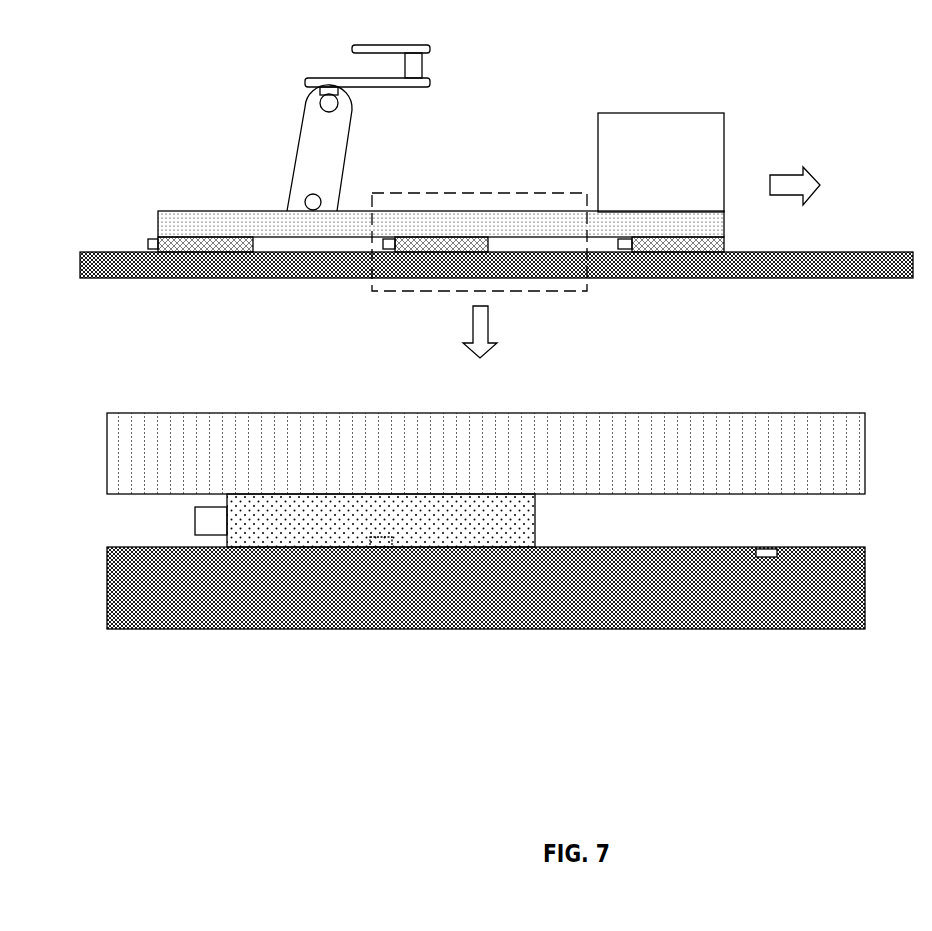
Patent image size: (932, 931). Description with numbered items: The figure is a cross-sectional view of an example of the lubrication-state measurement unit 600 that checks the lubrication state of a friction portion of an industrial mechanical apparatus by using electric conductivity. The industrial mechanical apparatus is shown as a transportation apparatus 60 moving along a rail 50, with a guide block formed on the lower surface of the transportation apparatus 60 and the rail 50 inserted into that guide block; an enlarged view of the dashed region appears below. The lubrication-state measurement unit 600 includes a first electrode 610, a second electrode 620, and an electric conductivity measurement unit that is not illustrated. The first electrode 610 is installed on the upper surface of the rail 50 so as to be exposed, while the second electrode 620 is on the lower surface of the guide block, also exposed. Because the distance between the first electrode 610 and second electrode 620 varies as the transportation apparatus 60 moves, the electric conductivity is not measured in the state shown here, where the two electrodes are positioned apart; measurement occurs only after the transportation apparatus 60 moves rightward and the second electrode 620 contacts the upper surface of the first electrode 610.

The rail 50 is at (845, 252).
The transportation apparatus 60 is at (227, 100).
The lubrication-state measurement unit 600 is at (486, 634).
The first electrode 610 is at (772, 557).
The second electrode 620 is at (390, 547).